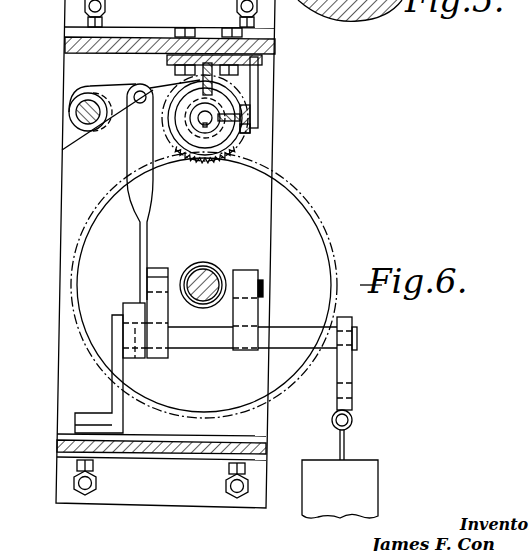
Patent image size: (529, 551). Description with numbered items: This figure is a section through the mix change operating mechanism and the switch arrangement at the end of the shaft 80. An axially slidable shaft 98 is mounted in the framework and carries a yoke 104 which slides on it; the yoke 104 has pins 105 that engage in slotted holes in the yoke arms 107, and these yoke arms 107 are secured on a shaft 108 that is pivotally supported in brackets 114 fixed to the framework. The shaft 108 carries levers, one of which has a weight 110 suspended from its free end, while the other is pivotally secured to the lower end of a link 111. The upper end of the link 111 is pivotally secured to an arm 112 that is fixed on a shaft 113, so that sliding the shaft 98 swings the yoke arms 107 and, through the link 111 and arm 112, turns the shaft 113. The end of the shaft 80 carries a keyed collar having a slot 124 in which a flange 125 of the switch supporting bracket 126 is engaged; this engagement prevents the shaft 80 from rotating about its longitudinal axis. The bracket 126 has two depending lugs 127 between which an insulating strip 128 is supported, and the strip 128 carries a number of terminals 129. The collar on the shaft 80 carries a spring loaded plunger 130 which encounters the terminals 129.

The shaft 80 is at (150, 124).
The axially slidable shaft 98 is at (198, 272).
The yoke 104 is at (218, 265).
The pins 105 is at (147, 280).
The yoke arms 107 is at (230, 358).
The shaft 108 is at (292, 330).
The weight 110 is at (374, 470).
The link 111 is at (132, 153).
The arm 112 is at (98, 86).
The shaft 113 is at (76, 111).
The brackets 114 is at (117, 423).
The slot 124 is at (85, 127).
The flange 125 is at (203, 80).
The switch supporting bracket 126 is at (262, 67).
The depending lugs 127 is at (259, 104).
The insulating strip 128 is at (247, 131).
The terminals 129 is at (251, 119).
The spring loaded plunger 130 is at (239, 165).